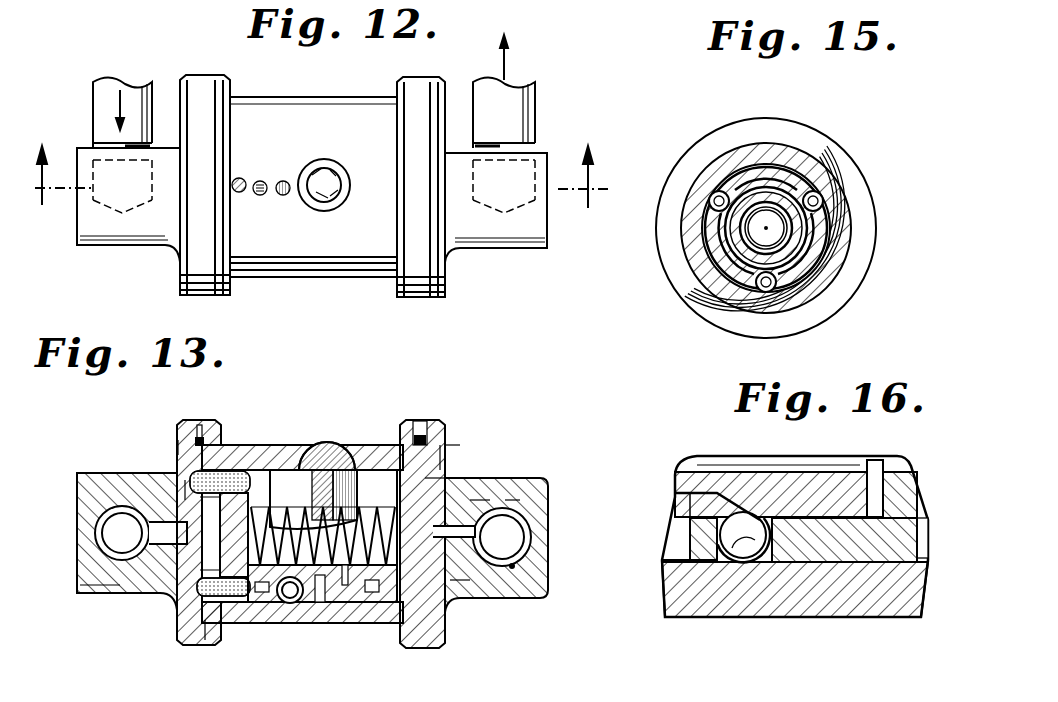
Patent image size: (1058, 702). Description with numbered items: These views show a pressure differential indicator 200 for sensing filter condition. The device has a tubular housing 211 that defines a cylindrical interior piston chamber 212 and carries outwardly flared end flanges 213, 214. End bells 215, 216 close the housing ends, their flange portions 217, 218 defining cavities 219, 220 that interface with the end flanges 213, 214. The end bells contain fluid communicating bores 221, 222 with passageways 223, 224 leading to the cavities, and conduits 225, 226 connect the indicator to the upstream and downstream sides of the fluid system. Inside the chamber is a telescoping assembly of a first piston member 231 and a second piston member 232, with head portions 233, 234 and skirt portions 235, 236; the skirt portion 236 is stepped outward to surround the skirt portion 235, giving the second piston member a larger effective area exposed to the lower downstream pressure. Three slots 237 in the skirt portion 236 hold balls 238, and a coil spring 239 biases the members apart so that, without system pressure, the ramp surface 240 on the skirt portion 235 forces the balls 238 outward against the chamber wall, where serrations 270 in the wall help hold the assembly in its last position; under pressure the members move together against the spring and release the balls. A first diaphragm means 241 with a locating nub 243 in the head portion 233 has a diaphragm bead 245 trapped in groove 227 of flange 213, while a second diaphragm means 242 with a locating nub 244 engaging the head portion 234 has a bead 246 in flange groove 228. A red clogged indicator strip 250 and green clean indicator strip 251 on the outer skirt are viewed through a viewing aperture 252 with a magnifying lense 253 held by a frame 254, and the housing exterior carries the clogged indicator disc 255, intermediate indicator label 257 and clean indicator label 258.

In FIG. 12, the pressure differential indicator 200 is at (556, 70).
In FIG. 15, the pressure differential indicator 200 is at (680, 308).
In FIG. 13, the pressure differential indicator 200 is at (495, 432).
In FIG. 12, the tubular housing 211 is at (252, 262).
In FIG. 15, the tubular housing 211 is at (782, 150).
In FIG. 13, the tubular housing 211 is at (255, 447).
In FIG. 16, the tubular housing 211 is at (700, 625).
In FIG. 13, the cylindrical interior piston chamber 212 is at (258, 475).
In FIG. 16, the cylindrical interior piston chamber 212 is at (678, 555).
In FIG. 12, the end flange 213 is at (190, 270).
In FIG. 15, the end flange 213 is at (733, 130).
In FIG. 13, the end flange 213 is at (210, 440).
In FIG. 12, the end flange 214 is at (440, 284).
In FIG. 13, the end flange 214 is at (422, 437).
In FIG. 12, the end bell 215 is at (100, 228).
In FIG. 13, the end bell 215 is at (88, 564).
In FIG. 12, the end bell 216 is at (520, 240).
In FIG. 13, the end bell 216 is at (552, 580).
In FIG. 13, the flange portion 217 is at (180, 445).
In FIG. 13, the flange portion 218 is at (450, 445).
In FIG. 13, the cavity 219 is at (188, 490).
In FIG. 13, the cavity 220 is at (435, 485).
In FIG. 13, the fluid communicating bore 221 is at (80, 594).
In FIG. 13, the fluid communicating bore 222 is at (512, 570).
In FIG. 12, the passageway 223 is at (160, 148).
In FIG. 13, the passageway 223 is at (160, 545).
In FIG. 12, the passageway 224 is at (455, 150).
In FIG. 13, the passageway 224 is at (473, 562).
In FIG. 12, the conduit 225 is at (100, 100).
In FIG. 13, the conduit 225 is at (80, 520).
In FIG. 12, the conduit 226 is at (520, 111).
In FIG. 13, the conduit 226 is at (528, 525).
In FIG. 13, the groove 227 is at (200, 440).
In FIG. 13, the flange groove 228 is at (422, 428).
In FIG. 13, the first piston member 231 is at (262, 602).
In FIG. 13, the second piston member 232 is at (395, 628).
In FIG. 16, the second piston member 232 is at (915, 500).
In FIG. 13, the head portion 233 is at (205, 585).
In FIG. 13, the head portion 234 is at (480, 500).
In FIG. 15, the skirt portion 235 is at (802, 242).
In FIG. 13, the skirt portion 235 is at (325, 605).
In FIG. 16, the skirt portion 235 is at (830, 487).
In FIG. 15, the skirt portion 236 is at (806, 266).
In FIG. 13, the skirt portion 236 is at (378, 602).
In FIG. 16, the skirt portion 236 is at (815, 548).
In FIG. 15, the slot 237 is at (716, 196).
In FIG. 13, the slot 237 is at (280, 602).
In FIG. 16, the slot 237 is at (735, 560).
In FIG. 15, the ball 238 is at (816, 200).
In FIG. 13, the ball 238 is at (290, 602).
In FIG. 16, the ball 238 is at (748, 562).
In FIG. 15, the coil spring 239 is at (786, 226).
In FIG. 13, the coil spring 239 is at (352, 605).
In FIG. 16, the ramp surface 240 is at (718, 492).
In FIG. 13, the first diaphragm means 241 is at (190, 480).
In FIG. 13, the second diaphragm means 242 is at (520, 500).
In FIG. 13, the locating nub 243 is at (165, 580).
In FIG. 13, the diaphragm locating nub 244 is at (460, 590).
In FIG. 13, the diaphragm bead 245 is at (205, 640).
In FIG. 13, the diaphragm bead 246 is at (445, 455).
In FIG. 13, the clogged indicator strip 250 is at (305, 516).
In FIG. 13, the clean filter indicator strip 251 is at (355, 470).
In FIG. 13, the viewing aperture 252 is at (335, 448).
In FIG. 12, the magnifying lense 253 is at (340, 168).
In FIG. 13, the magnifying lense 253 is at (316, 445).
In FIG. 12, the frame 254 is at (333, 210).
In FIG. 13, the frame 254 is at (302, 458).
In FIG. 12, the clogged indicator disc 255 is at (240, 176).
In FIG. 12, the intermediate indicator label 257 is at (262, 197).
In FIG. 12, the clean indicator label 258 is at (284, 180).
In FIG. 15, the serrations 270 is at (800, 178).
In FIG. 16, the serrations 270 is at (685, 565).